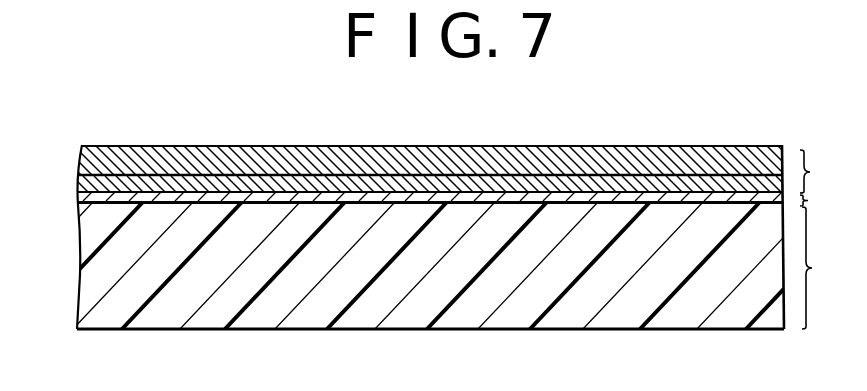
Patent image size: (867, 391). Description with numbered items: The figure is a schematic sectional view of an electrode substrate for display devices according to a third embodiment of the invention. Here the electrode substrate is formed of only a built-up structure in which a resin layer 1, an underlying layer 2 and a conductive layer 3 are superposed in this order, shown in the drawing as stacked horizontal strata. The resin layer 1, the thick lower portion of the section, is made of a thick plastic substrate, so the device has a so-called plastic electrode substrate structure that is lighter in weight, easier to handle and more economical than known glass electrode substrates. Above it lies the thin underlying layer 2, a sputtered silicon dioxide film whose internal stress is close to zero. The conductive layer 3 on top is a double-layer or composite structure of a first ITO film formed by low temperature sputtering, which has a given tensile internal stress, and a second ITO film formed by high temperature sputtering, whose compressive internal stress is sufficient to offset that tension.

The resin layer 1 is at (818, 268).
The underlying layer 2 is at (808, 200).
The conductive layer 3 is at (817, 171).